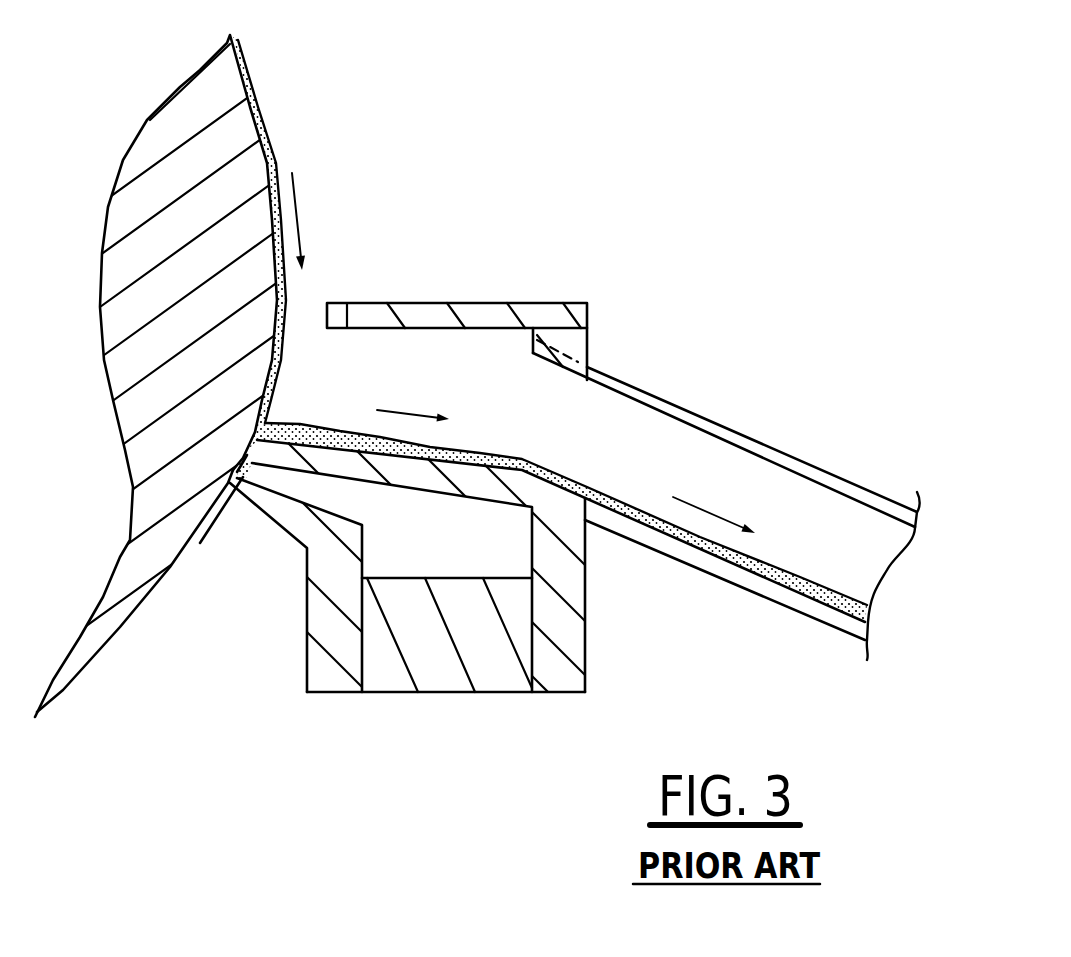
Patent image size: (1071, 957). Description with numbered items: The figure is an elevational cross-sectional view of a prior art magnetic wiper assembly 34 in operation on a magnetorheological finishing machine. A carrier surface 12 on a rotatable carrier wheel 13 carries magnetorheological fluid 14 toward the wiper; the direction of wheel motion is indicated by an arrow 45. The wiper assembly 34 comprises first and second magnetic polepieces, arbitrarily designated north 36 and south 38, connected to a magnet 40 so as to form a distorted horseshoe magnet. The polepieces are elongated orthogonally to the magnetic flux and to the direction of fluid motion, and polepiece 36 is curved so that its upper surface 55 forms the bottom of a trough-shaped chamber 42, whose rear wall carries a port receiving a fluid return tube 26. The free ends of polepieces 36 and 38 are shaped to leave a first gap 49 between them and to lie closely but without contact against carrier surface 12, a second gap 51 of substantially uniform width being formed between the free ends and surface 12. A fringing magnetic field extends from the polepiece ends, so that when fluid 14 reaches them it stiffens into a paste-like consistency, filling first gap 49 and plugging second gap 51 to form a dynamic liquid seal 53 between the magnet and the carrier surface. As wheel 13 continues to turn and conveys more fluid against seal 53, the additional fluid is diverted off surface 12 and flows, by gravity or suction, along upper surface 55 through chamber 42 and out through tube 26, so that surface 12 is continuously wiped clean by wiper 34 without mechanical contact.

The carrier surface 12 is at (142, 607).
The carrier wheel 13 is at (209, 327).
The magnetorheological fluid 14 is at (283, 282).
The fluid return tube 26 is at (757, 445).
The magnetic wiper assembly 34 is at (596, 266).
The north magnetic polepiece 36 is at (575, 648).
The south magnetic polepiece 38 is at (317, 653).
The magnet 40 is at (455, 682).
The trough-shaped chamber 42 is at (408, 370).
The blade movement direction 45 is at (300, 205).
The first gap 49 is at (255, 470).
The second gap 51 is at (170, 493).
The dynamic liquid seal 53 is at (225, 445).
The upper surface of polepiece 36 55 is at (470, 443).